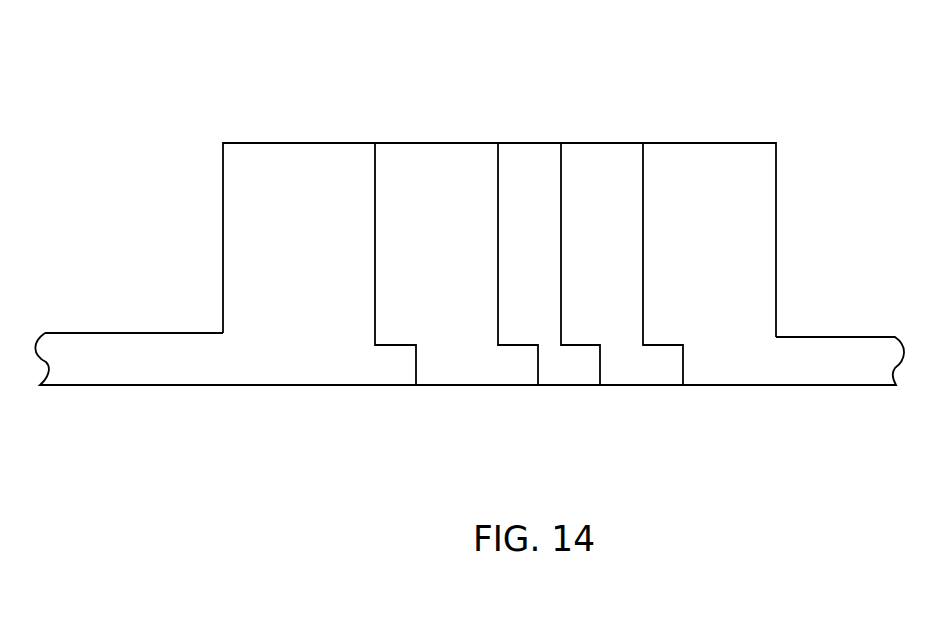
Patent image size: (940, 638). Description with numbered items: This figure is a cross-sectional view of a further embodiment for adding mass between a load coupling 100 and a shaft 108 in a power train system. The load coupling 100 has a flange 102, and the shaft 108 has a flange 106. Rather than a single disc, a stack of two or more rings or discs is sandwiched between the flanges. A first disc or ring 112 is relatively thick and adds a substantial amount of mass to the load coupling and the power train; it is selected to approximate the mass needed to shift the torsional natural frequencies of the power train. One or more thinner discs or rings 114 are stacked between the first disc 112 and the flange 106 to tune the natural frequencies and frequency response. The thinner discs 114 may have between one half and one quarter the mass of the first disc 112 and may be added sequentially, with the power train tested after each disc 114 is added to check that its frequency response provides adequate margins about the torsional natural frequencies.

The load coupling 100 is at (60, 314).
The flange 102 is at (315, 262).
The flange 106 is at (730, 262).
The shaft 108 is at (853, 353).
The first disc or ring 112 is at (456, 262).
The thinner discs or rings 114 is at (543, 165).